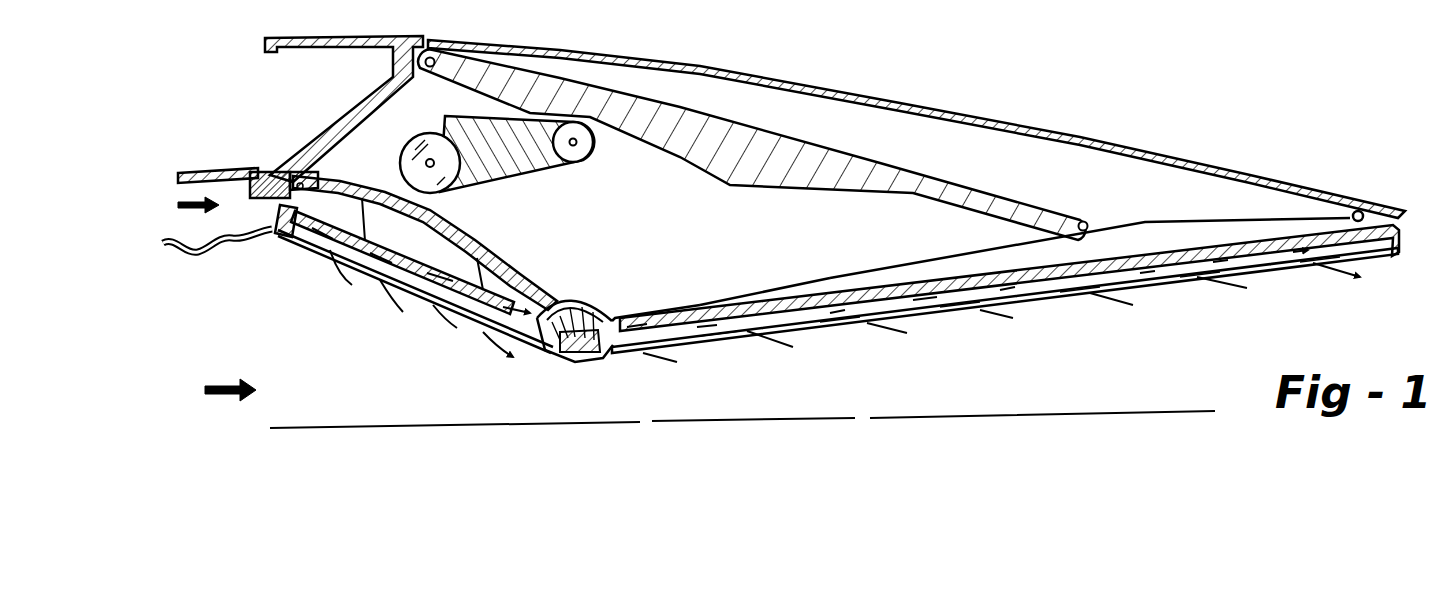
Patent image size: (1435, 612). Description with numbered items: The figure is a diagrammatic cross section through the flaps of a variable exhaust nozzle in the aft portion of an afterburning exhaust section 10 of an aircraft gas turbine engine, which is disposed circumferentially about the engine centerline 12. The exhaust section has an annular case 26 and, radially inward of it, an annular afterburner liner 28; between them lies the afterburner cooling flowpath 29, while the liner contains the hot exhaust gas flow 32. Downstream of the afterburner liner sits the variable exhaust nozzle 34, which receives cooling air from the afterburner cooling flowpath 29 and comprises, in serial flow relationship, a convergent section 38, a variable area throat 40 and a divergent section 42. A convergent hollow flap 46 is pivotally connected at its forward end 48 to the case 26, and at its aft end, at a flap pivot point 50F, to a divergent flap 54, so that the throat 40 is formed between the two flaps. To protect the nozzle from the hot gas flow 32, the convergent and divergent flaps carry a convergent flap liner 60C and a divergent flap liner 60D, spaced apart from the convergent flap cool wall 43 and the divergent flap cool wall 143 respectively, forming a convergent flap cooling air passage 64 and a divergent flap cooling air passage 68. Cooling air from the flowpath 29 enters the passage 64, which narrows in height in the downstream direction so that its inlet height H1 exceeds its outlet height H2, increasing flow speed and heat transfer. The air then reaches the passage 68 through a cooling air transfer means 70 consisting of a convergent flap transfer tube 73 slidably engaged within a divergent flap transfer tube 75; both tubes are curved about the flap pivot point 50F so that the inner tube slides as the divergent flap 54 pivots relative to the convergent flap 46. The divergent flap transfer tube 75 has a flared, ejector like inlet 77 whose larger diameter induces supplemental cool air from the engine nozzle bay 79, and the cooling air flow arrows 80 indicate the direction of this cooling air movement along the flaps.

The afterburning exhaust section 10 is at (275, 40).
The engine centerline 12 is at (960, 412).
The annular case 26 is at (183, 170).
The annular afterburner liner 28 is at (250, 245).
The afterburner cooling flowpath 29 is at (162, 212).
The hot exhaust gas flow 32 is at (220, 387).
The variable exhaust nozzle 34 is at (560, 44).
The convergent section 38 is at (392, 359).
The variable area throat 40 is at (600, 454).
The divergent section 42 is at (1090, 364).
The convergent flap cool wall 43 is at (465, 245).
The convergent hollow flap 46 is at (500, 277).
The forward end 48 is at (305, 180).
The flap pivot point 50F is at (570, 358).
The divergent flap 54 is at (887, 288).
The convergent flap liner 60C is at (420, 300).
The divergent flap liner 60D is at (848, 325).
The convergent flap cooling air passage 64 is at (362, 242).
The divergent flap cooling air passage 68 is at (737, 300).
The cooling air transfer means 70 is at (592, 306).
The convergent flap transfer tube 73 is at (572, 300).
The divergent flap transfer tube 75 is at (612, 318).
The ejector like inlet 77 is at (600, 345).
The engine nozzle bay 79 is at (636, 227).
The airflow arrows 80 is at (332, 258).
The divergent flap cool wall 143 is at (953, 287).
The inlet height H1 is at (285, 262).
The outlet height H2 is at (530, 345).